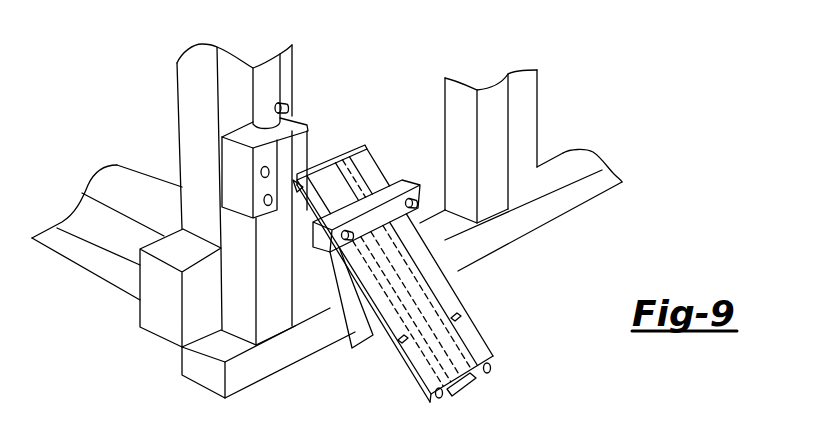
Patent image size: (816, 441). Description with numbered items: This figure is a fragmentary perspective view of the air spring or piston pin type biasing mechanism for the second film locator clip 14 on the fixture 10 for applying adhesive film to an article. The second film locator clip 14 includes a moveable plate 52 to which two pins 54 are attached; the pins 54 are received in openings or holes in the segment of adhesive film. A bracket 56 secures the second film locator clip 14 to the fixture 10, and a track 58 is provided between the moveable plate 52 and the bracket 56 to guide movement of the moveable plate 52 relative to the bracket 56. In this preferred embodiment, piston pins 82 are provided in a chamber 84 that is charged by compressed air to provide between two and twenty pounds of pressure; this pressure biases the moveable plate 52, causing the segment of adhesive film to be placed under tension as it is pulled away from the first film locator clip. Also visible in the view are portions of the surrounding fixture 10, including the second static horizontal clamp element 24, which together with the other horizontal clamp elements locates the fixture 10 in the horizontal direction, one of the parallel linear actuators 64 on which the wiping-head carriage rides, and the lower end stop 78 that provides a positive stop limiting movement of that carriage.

The fixture 10 is at (577, 197).
The second film locator clip 14 is at (407, 178).
The second static horizontal clamp element 24 is at (122, 277).
The moveable plate 52 is at (480, 351).
The pins 54 is at (418, 197).
The bracket 56 is at (357, 313).
The track 58 is at (461, 386).
The linear actuator 64 is at (273, 82).
The lower end stop 78 is at (228, 157).
The piston pins 82 is at (363, 171).
The chamber 84 is at (461, 328).